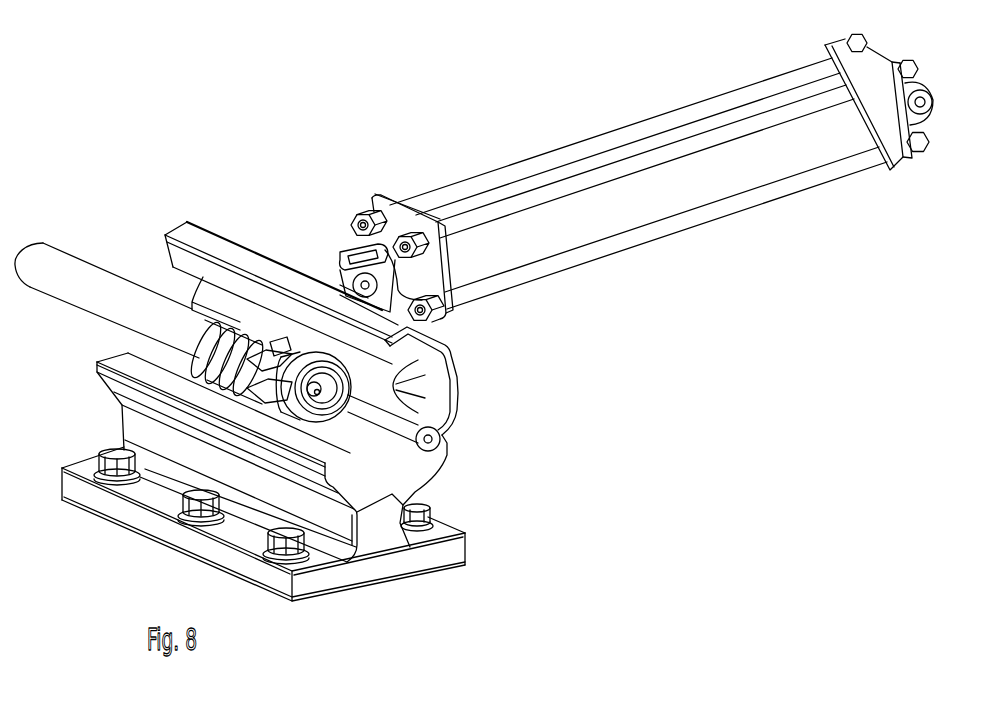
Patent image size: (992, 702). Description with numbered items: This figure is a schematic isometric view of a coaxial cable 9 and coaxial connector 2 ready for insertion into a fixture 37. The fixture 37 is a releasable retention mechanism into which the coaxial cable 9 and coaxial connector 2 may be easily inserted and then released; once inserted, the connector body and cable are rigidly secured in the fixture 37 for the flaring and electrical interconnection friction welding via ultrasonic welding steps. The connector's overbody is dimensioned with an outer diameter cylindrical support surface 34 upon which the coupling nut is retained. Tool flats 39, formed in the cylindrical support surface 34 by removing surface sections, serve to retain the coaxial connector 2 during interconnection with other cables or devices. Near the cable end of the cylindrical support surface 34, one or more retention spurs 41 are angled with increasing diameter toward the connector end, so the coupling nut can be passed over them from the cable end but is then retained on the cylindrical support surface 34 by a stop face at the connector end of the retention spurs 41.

The coaxial cable 9 is at (139, 307).
The coaxial connector 2 is at (252, 347).
The tool flats 39 is at (268, 365).
The retention spurs 41 is at (278, 350).
The cylindrical support surface 34 is at (286, 350).
The fixture 37 is at (449, 381).